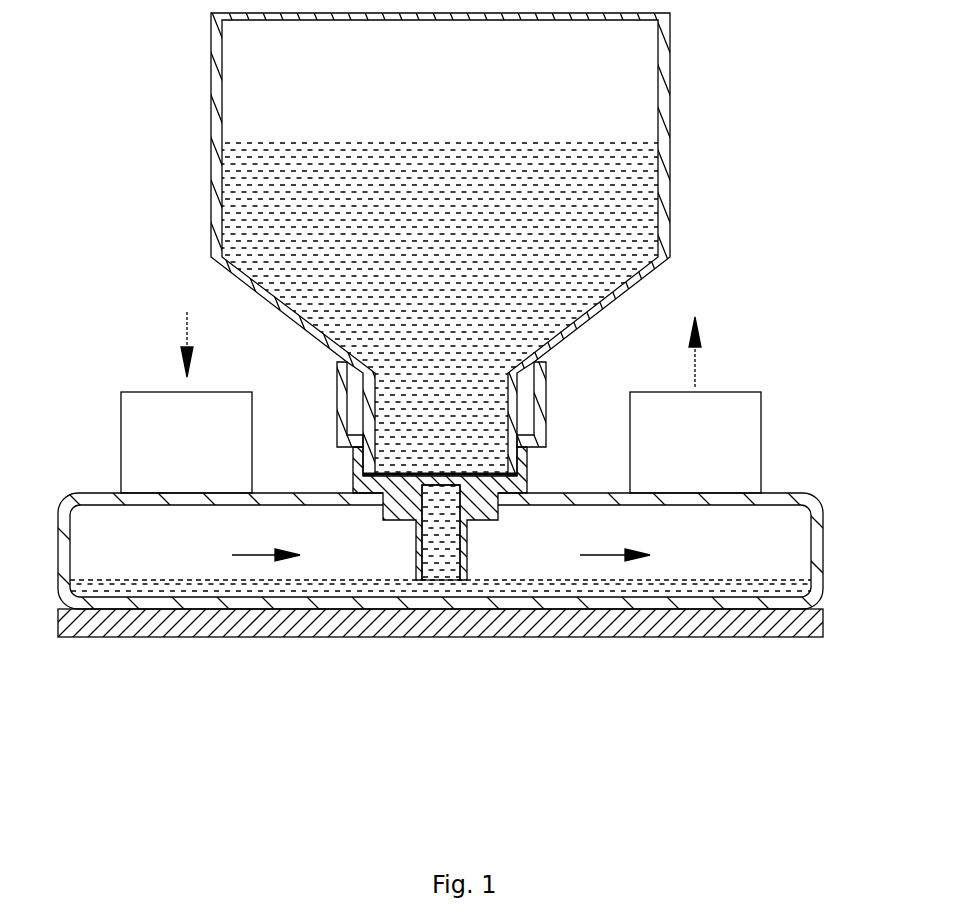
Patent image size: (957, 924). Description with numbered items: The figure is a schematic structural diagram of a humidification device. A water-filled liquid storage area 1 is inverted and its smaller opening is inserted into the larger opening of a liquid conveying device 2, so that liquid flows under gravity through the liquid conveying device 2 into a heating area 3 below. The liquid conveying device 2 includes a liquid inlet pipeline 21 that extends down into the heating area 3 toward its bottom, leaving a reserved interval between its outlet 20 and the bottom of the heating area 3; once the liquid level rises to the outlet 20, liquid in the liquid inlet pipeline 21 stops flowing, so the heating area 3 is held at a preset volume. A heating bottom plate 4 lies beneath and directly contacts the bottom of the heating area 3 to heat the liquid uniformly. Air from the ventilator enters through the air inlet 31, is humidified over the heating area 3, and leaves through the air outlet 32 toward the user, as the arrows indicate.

The liquid storage area 1 is at (632, 72).
The liquid conveying device 2 is at (543, 373).
The heating area 3 is at (773, 535).
The heating bottom plate 4 is at (635, 625).
The outlet 20 is at (443, 580).
The liquid inlet pipeline 21 is at (437, 530).
The air inlet 31 is at (135, 440).
The air outlet 32 is at (738, 432).